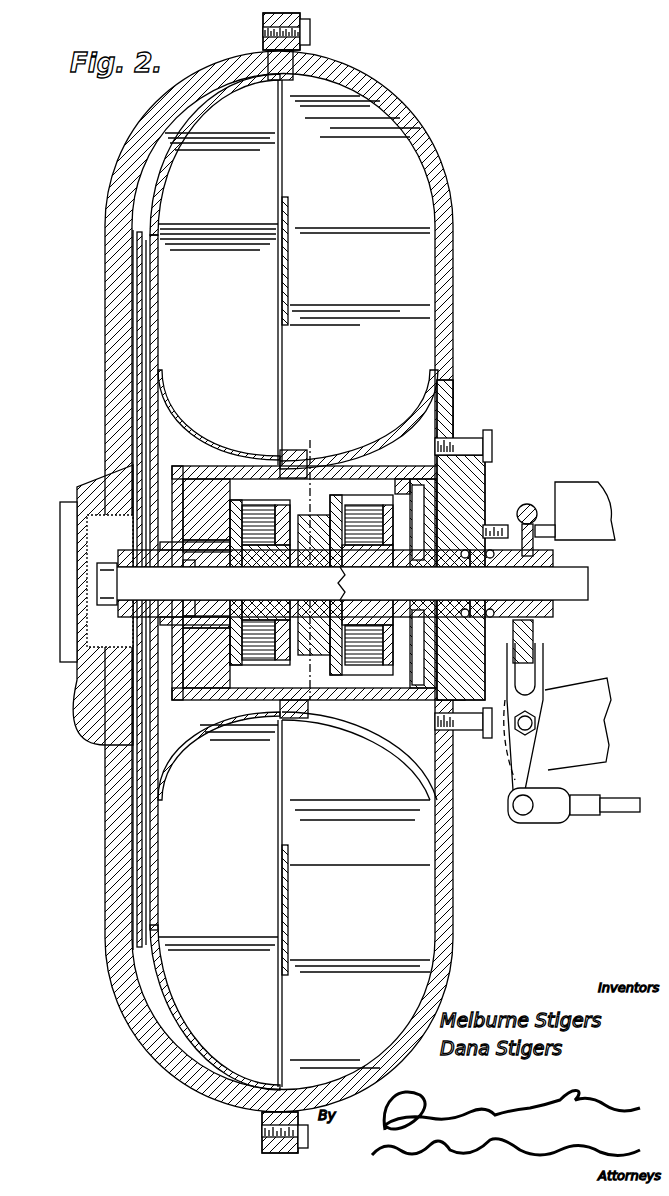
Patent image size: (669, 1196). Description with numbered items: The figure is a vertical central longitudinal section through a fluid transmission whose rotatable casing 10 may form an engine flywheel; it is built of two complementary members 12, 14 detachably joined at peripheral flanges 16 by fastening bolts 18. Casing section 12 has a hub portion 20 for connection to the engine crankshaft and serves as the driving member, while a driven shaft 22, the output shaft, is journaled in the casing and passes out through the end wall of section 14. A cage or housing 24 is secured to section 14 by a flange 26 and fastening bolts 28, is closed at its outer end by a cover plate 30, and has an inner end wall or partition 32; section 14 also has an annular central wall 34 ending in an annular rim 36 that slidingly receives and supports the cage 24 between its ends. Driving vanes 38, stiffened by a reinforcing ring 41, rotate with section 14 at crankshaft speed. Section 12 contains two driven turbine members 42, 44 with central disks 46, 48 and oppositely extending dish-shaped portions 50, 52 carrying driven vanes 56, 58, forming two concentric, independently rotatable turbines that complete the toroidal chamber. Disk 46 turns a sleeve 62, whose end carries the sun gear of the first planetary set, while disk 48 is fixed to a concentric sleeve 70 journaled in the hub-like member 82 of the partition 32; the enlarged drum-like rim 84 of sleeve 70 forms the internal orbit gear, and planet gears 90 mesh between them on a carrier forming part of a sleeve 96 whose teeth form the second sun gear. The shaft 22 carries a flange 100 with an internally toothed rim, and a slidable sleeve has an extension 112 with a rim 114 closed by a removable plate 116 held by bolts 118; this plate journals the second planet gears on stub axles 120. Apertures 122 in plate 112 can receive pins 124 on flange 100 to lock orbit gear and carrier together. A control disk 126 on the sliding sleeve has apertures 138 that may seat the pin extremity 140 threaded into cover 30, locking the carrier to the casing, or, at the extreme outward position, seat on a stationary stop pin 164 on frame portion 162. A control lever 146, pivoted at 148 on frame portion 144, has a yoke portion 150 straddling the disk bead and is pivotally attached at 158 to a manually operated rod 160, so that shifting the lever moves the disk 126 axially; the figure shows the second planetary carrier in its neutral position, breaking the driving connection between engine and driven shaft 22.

The rotatable casing 10 is at (360, 46).
The complementary casing member 12 is at (248, 581).
The complementary casing member 14 is at (433, 160).
The peripheral flanges 16 is at (284, 45).
The fastening bolts 18 is at (310, 36).
The hub portion 20 is at (60, 503).
The driven shaft 22 is at (590, 588).
The cage or housing 24 is at (210, 704).
The flange 26 is at (447, 428).
The fastening bolts 28 is at (492, 445).
The cover plate 30 is at (480, 480).
The end wall or partition 32 is at (183, 660).
The annular central wall 34 is at (346, 440).
The annular rim 36 is at (270, 462).
The vanes or blades 38 is at (425, 250).
The annular web or reinforcing ring 41 is at (288, 925).
The driven turbine member 42 is at (137, 287).
The driven turbine member 44 is at (152, 322).
The annular disk-like portion 46 is at (140, 452).
The annular disk-like portion 48 is at (150, 432).
The annular dish-shaped portion 50 is at (178, 140).
The annular dish-shaped portion 52 is at (208, 420).
The driven vanes 56 is at (283, 180).
The driven vanes 58 is at (296, 272).
The sleeve 62 is at (160, 566).
The concentric sleeve 70 is at (186, 540).
The central hub-like member 82 is at (218, 636).
The drum-like flange or rim 84 is at (240, 500).
The planet gears 90 is at (265, 558).
The sleeve 96 is at (318, 560).
The flange 100 is at (432, 565).
The flange-like integral extension 112 is at (470, 577).
The rim 114 is at (362, 700).
The removable closure 116 is at (308, 468).
The fastening bolts 118 is at (318, 702).
The screw-threaded stub axles 120 is at (370, 540).
The apertures 122 is at (420, 510).
The pins 124 is at (440, 732).
The control disk 126 is at (540, 633).
The apertures 138 is at (528, 504).
The pin extremity 140 is at (507, 524).
The fixed frame portion 144 is at (575, 702).
The control lever 146 is at (520, 762).
The pivot or fulcrum 148 is at (532, 727).
The yoke portion 150 is at (544, 660).
The pivotal attachment 158 is at (524, 810).
The rod 160 is at (612, 812).
The frame portion 162 is at (578, 500).
The stop pin 164 is at (548, 524).